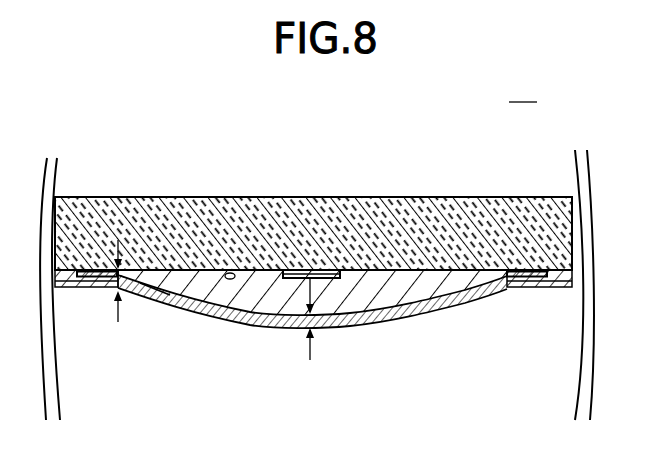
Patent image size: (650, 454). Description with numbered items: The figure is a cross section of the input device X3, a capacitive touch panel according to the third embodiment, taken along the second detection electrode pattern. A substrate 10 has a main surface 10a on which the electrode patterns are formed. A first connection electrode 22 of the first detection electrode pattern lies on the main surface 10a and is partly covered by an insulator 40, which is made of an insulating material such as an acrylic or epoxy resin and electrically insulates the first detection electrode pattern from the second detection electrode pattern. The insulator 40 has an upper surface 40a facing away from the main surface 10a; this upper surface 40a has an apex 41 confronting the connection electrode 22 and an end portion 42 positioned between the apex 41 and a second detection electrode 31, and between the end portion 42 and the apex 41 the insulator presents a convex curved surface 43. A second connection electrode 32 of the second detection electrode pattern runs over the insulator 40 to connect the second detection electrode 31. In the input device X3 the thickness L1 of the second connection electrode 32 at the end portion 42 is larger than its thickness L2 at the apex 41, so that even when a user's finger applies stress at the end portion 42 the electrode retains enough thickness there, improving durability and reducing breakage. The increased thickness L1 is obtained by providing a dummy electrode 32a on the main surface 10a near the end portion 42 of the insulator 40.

The substrate 10 is at (166, 197).
The main surface 10a is at (219, 270).
The first connection electrode 22 is at (310, 285).
The second detection electrode 31 is at (70, 283).
The second connection electrode 32 is at (378, 328).
The dummy electrode 32a is at (95, 271).
The insulator 40 is at (265, 327).
The upper surface 40a is at (223, 313).
The apex 41 is at (293, 327).
The end portion 42 is at (140, 270).
The convex curved surface 43 is at (153, 303).
The thickness L1 is at (109, 298).
The thickness L2 is at (321, 329).
The input device X3 is at (498, 129).